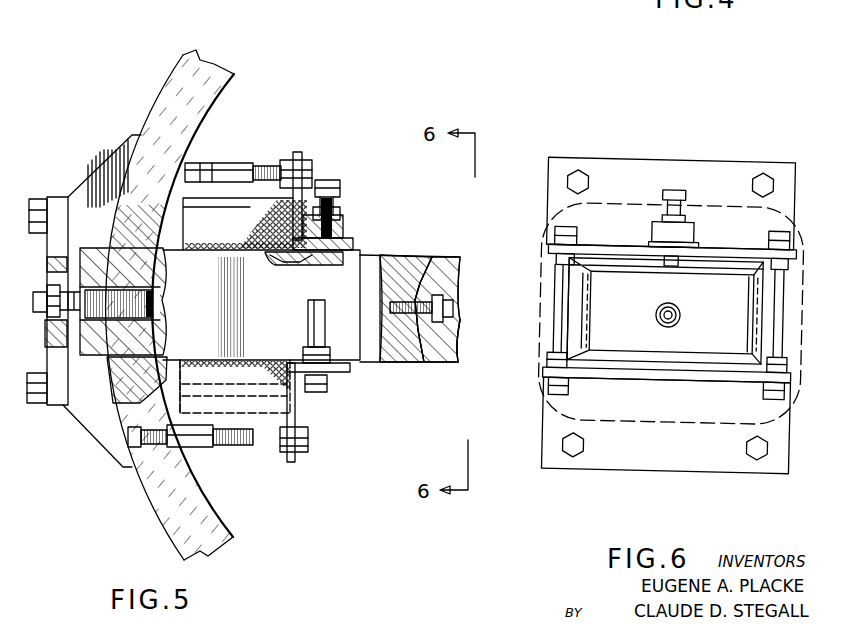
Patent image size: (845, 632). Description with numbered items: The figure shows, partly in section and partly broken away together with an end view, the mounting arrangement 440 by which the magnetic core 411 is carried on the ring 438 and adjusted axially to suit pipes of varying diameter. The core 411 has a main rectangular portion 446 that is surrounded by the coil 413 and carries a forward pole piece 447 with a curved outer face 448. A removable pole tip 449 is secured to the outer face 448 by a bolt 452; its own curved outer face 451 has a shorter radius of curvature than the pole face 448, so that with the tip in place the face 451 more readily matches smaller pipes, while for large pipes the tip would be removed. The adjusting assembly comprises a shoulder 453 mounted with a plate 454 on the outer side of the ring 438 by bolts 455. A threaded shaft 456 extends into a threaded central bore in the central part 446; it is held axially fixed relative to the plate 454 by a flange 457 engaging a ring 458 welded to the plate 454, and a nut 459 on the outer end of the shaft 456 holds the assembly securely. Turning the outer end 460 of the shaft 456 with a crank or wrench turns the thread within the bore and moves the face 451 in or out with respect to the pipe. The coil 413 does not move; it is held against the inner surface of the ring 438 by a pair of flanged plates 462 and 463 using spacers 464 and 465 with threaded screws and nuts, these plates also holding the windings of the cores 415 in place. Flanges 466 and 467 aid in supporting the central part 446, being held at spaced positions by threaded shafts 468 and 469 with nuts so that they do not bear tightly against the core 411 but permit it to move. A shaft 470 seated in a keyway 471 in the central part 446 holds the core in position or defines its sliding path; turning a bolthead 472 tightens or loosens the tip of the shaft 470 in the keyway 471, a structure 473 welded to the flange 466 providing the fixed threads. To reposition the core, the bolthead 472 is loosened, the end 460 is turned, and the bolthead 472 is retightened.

In FIG. 5, the magnetic core 411 is at (388, 252).
In FIG. 6, the magnetic core 411 is at (578, 295).
In FIG. 5, the coil 413 is at (226, 237).
In FIG. 6, the coil 413 is at (565, 209).
In FIG. 5, the cores 415 is at (180, 58).
In FIG. 5, the ring 438 is at (173, 90).
In FIG. 5, the mounting arrangement 440 is at (90, 200).
In FIG. 5, the main rectangular portion 446 is at (207, 290).
In FIG. 5, the forward pole piece 447 is at (418, 362).
In FIG. 5, the curved outer face 448 is at (428, 350).
In FIG. 5, the removable pole tip 449 is at (449, 258).
In FIG. 6, the removable pole tip 449 is at (638, 317).
In FIG. 5, the curved outer face 451 is at (460, 340).
In FIG. 5, the bolt 452 is at (455, 305).
In FIG. 6, the bolt 452 is at (680, 317).
In FIG. 5, the shoulder 453 is at (92, 418).
In FIG. 5, the plate 454 is at (50, 404).
In FIG. 5, the bolts 455 is at (30, 199).
In FIG. 5, the threaded shaft 456 is at (165, 328).
In FIG. 5, the flange 457 is at (88, 362).
In FIG. 5, the ring 458 is at (70, 282).
In FIG. 5, the nut 459 is at (43, 316).
In FIG. 5, the outer end 460 is at (33, 300).
In FIG. 5, the flanged plate 462 is at (302, 150).
In FIG. 6, the flanged plate 462 is at (625, 167).
In FIG. 5, the flanged plate 463 is at (296, 415).
In FIG. 6, the flanged plate 463 is at (653, 462).
In FIG. 5, the spacer 464 is at (248, 163).
In FIG. 5, the spacer 465 is at (200, 450).
In FIG. 5, the flange 466 is at (356, 244).
In FIG. 6, the flange 466 is at (550, 252).
In FIG. 5, the flange 467 is at (346, 372).
In FIG. 6, the flange 467 is at (657, 375).
In FIG. 5, the shaft 468 is at (307, 326).
In FIG. 6, the shaft 468 is at (553, 347).
In FIG. 6, the shaft 469 is at (780, 332).
In FIG. 5, the shaft 470 is at (335, 262).
In FIG. 5, the keyway 471 is at (282, 262).
In FIG. 6, the keyway 471 is at (643, 258).
In FIG. 5, the bolthead 472 is at (328, 183).
In FIG. 6, the bolthead 472 is at (678, 190).
In FIG. 5, the structure 473 is at (350, 218).
In FIG. 6, the structure 473 is at (690, 235).